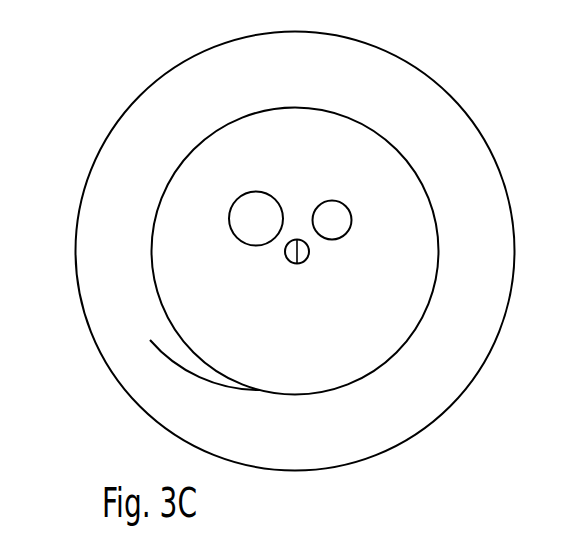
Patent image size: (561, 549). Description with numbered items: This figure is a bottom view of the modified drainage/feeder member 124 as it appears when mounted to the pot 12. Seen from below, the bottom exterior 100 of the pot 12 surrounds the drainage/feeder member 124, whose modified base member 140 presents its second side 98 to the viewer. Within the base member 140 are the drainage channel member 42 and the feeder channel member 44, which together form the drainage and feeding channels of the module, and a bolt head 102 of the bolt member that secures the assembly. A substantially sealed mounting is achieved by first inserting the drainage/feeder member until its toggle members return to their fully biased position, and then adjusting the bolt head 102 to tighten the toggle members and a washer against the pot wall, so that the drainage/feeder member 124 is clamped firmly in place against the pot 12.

The pot 12 is at (78, 166).
The drainage channel member 42 is at (270, 192).
The feeder channel member 44 is at (342, 202).
The second side 98 is at (295, 357).
The bottom exterior 100 is at (128, 256).
The bolt head 102 is at (308, 256).
The drainage/feeder member 124 is at (205, 369).
The base member 140 is at (170, 317).